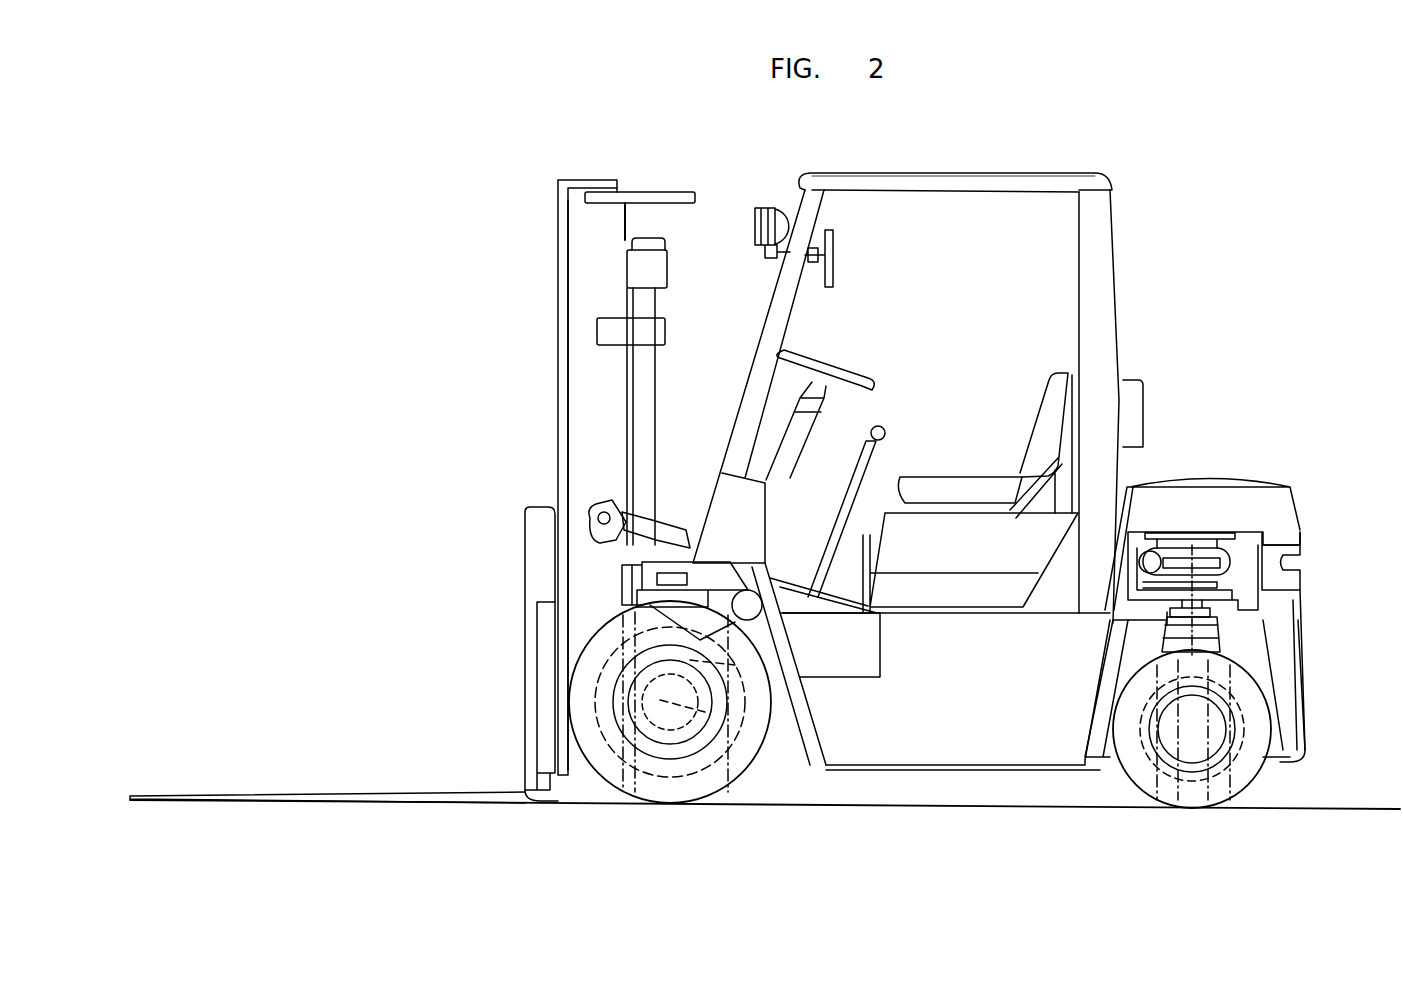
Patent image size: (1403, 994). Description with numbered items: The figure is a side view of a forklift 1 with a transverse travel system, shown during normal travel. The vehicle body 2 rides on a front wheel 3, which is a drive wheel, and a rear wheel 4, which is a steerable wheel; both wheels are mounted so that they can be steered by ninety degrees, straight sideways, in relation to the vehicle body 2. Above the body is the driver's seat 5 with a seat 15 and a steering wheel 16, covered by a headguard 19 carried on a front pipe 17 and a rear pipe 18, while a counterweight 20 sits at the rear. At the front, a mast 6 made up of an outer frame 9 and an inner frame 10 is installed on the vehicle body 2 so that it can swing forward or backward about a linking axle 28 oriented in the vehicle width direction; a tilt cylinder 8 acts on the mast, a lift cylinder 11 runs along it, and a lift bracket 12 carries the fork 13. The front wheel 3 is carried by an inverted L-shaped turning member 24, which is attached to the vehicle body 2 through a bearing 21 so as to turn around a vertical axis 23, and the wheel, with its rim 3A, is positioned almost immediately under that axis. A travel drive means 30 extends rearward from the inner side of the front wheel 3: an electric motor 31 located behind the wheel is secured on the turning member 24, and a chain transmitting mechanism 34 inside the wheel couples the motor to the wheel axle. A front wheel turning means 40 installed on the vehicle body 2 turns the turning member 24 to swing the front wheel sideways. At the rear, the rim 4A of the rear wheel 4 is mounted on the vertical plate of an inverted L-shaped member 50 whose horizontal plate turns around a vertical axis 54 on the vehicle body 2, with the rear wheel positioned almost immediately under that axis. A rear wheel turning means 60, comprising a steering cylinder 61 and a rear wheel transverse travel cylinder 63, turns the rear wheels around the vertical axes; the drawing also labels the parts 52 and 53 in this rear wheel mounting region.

The forklift 1 is at (1205, 355).
The vehicle body 2 is at (937, 748).
The front wheel 3 is at (745, 765).
The rim 3A is at (672, 760).
The rear wheel 4 is at (1160, 782).
The rim 4A is at (1198, 750).
The driver's seat 5 is at (880, 260).
The mast 6 is at (552, 418).
The tilt cylinder 8 is at (686, 510).
The outer frame 9 is at (578, 280).
The inner frame 10 is at (560, 355).
The lift cylinder 11 is at (646, 386).
The lift bracket 12 is at (546, 649).
The fork 13 is at (268, 792).
The seat 15 is at (975, 478).
The steering wheel 16 is at (832, 358).
The front pipe 17 is at (804, 212).
The rear pipe 18 is at (1088, 316).
The headguard 19 is at (1005, 170).
The counterweight 20 is at (1210, 496).
The bearing 21 is at (766, 528).
The vertical axis 23 is at (763, 558).
The turning member 24 is at (705, 688).
The linking axle 28 is at (527, 707).
The travel drive means 30 is at (772, 641).
The electric motor 31 is at (822, 601).
The chain transmitting mechanism 34 is at (757, 658).
The front wheel turning means 40 is at (655, 577).
The inverted L-letter shaped member 50 is at (1222, 646).
The rear axle bracket 52 is at (1172, 623).
The support member 53 is at (1167, 618).
The vertical axis 54 is at (1215, 614).
The rear wheel turning means 60 is at (1262, 531).
The steering cylinder 61 is at (1137, 518).
The rear wheel transverse travel cylinder 63 is at (1235, 564).